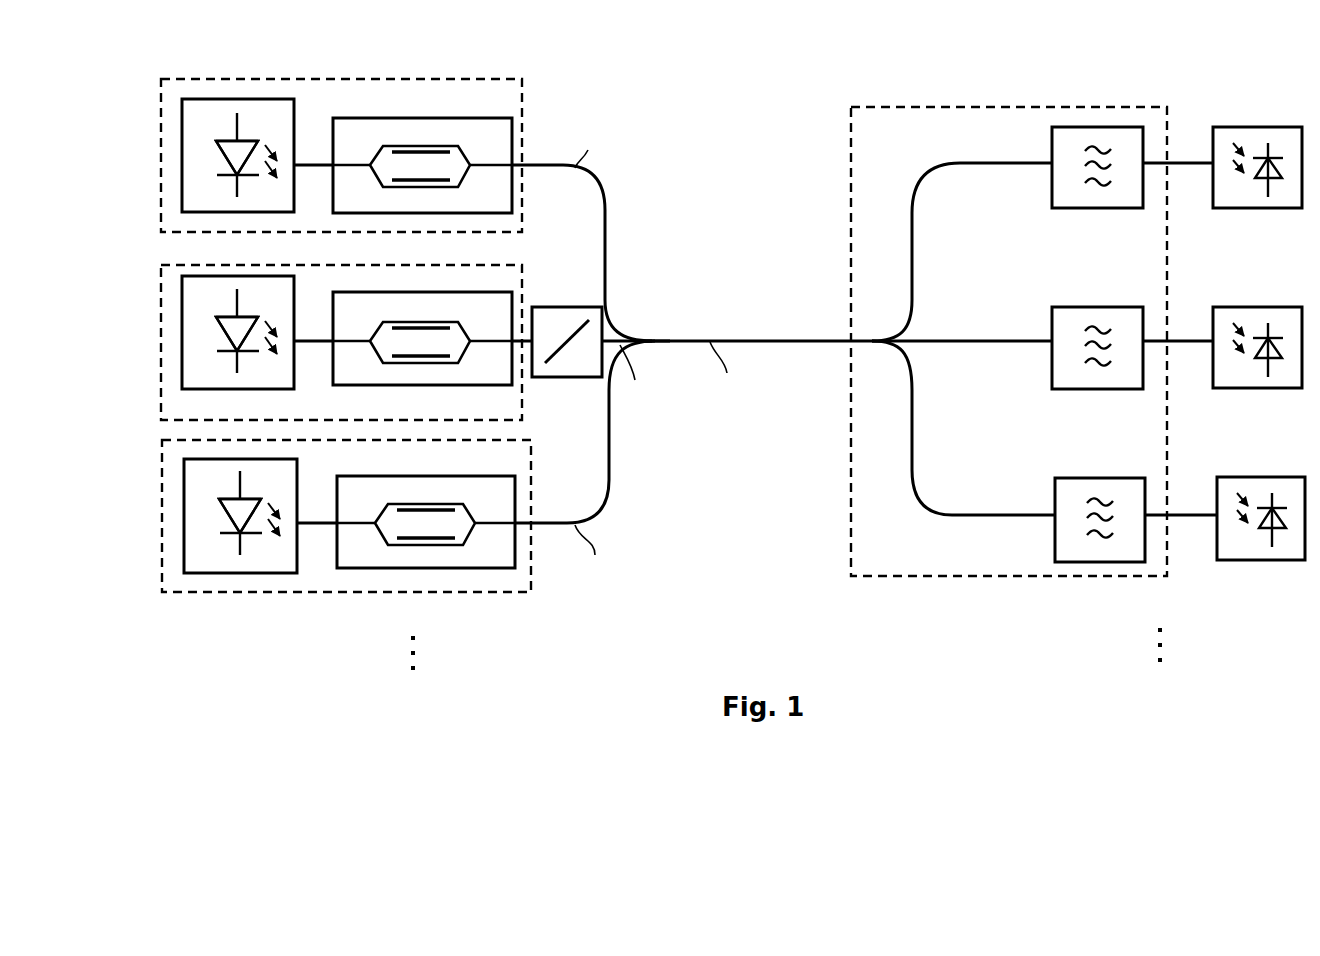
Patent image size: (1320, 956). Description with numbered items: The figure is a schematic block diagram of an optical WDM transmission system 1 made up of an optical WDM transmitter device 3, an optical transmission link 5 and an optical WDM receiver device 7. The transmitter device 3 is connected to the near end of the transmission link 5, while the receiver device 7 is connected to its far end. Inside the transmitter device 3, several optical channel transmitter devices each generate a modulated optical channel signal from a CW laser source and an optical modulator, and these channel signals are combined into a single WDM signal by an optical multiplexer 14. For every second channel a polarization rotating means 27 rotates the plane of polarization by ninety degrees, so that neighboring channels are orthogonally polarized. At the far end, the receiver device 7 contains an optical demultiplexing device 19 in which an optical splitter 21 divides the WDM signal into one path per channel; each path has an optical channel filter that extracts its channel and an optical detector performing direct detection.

The optical WDM transmission system 1 is at (773, 113).
The optical WDM transmitter device 3 is at (570, 647).
The optical transmission link 5 is at (755, 340).
The optical WDM receiver device 7 is at (1010, 627).
The optical multiplexer 14 is at (643, 320).
The optical demultiplexing device 19 is at (953, 107).
The optical splitter 21 is at (873, 362).
The polarization rotating means 27 is at (555, 318).